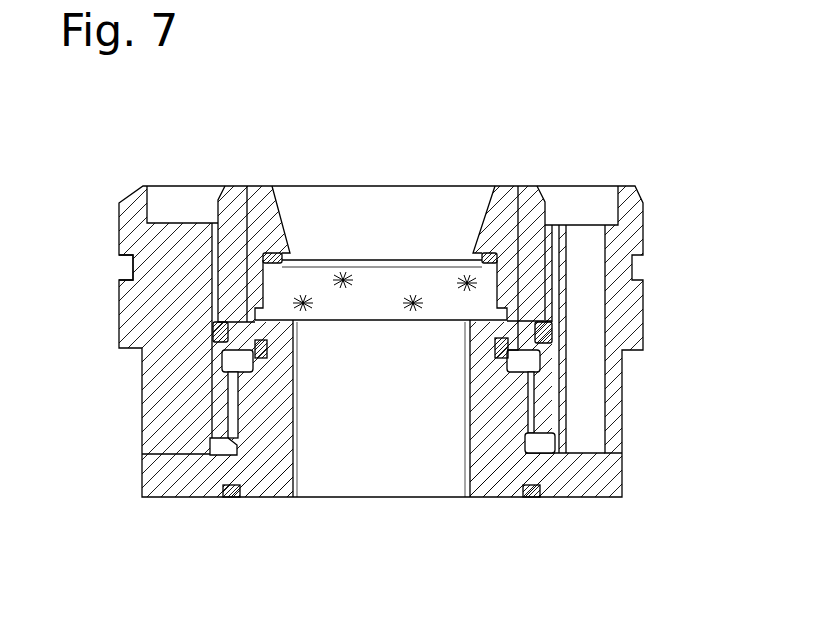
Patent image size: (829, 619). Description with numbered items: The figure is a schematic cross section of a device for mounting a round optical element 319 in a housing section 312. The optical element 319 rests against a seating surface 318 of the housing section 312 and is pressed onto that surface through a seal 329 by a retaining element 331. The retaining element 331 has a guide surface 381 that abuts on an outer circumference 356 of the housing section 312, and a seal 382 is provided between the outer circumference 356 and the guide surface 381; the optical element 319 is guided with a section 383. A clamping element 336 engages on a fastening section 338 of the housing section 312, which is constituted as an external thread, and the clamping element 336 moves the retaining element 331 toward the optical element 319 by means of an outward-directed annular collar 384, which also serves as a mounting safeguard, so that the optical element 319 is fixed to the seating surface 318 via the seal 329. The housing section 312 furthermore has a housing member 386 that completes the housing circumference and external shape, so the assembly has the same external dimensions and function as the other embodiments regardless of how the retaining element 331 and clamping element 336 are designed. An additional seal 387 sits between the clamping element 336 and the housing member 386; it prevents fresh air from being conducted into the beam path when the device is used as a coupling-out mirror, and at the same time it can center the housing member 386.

The housing section 312 is at (498, 473).
The seating surface 318 is at (270, 321).
The optical element 319 is at (395, 310).
The seal 329 is at (286, 243).
The retaining element 331 is at (505, 203).
The clamping element 336 is at (530, 202).
The fastening section 338 is at (250, 416).
The outer circumference 356 is at (226, 454).
The guide surface 381 is at (498, 334).
The seal 382 is at (457, 478).
The section 383 is at (248, 280).
The annular collar 384 is at (527, 358).
The housing member 386 is at (130, 297).
The seal 387 is at (212, 334).